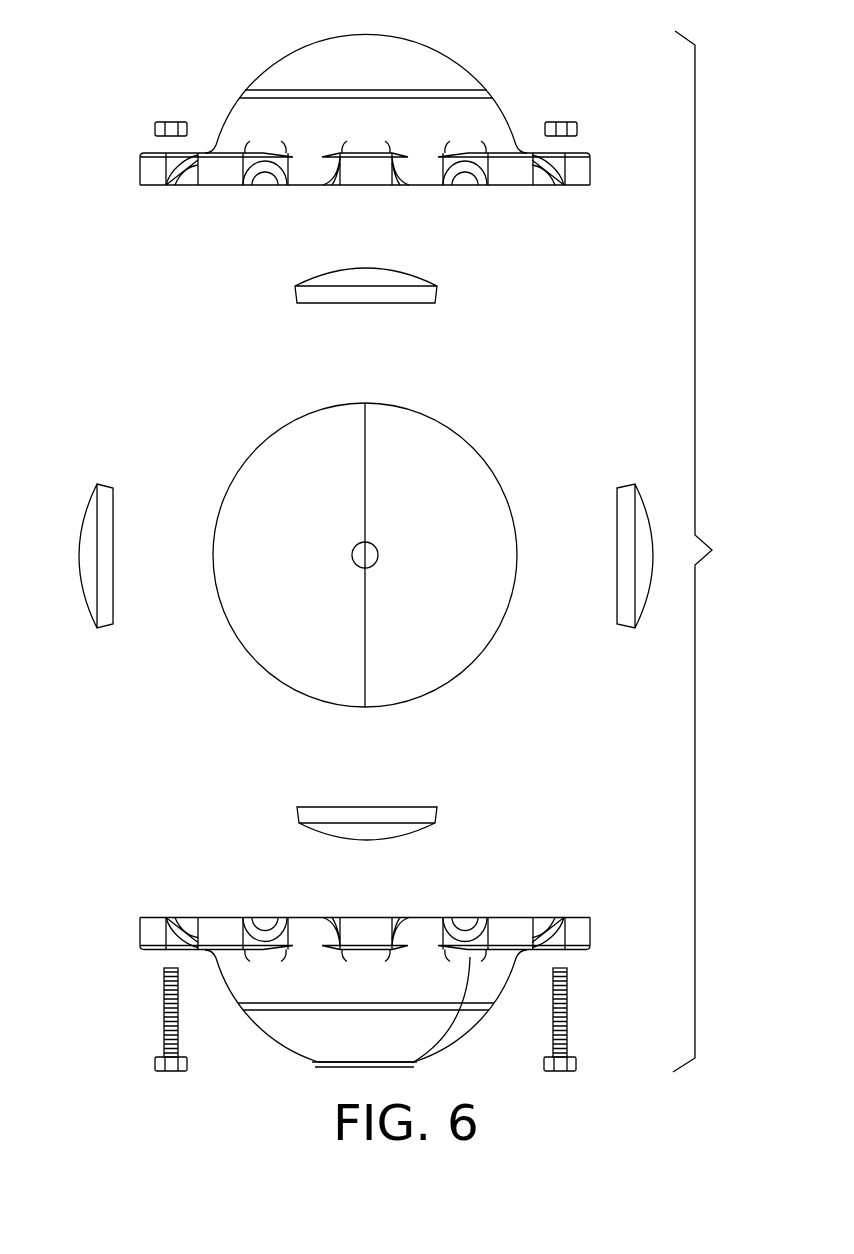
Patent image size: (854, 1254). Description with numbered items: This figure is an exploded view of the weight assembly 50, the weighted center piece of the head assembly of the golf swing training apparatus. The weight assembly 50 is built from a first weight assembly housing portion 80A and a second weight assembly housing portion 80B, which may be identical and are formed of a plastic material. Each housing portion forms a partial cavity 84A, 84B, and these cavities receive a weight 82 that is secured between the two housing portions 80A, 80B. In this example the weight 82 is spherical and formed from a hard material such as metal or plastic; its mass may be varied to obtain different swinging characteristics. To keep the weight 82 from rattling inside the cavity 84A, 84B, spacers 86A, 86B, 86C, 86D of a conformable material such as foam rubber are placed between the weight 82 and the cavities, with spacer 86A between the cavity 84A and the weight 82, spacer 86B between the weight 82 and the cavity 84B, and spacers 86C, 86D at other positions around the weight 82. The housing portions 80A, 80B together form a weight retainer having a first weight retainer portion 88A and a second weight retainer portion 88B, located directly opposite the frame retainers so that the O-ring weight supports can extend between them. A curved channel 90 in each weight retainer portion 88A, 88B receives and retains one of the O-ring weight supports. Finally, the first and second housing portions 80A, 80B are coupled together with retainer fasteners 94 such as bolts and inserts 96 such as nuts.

The weight assembly 50 is at (708, 551).
The first weight assembly housing portion 80A is at (590, 173).
The second weight assembly housing portion 80B is at (553, 917).
The weight 82 is at (263, 672).
The partial cavity 84A is at (245, 88).
The partial cavity 84B is at (290, 1048).
The spacer 86A is at (437, 288).
The spacer 86B is at (437, 812).
The spacer 86C is at (618, 487).
The spacer 86D is at (110, 487).
The first weight retainer portion 88A is at (140, 170).
The second weight retainer portion 88B is at (140, 932).
The channel 90 is at (260, 180).
The retainer fastener 94 is at (155, 1063).
The insert 96 is at (153, 129).